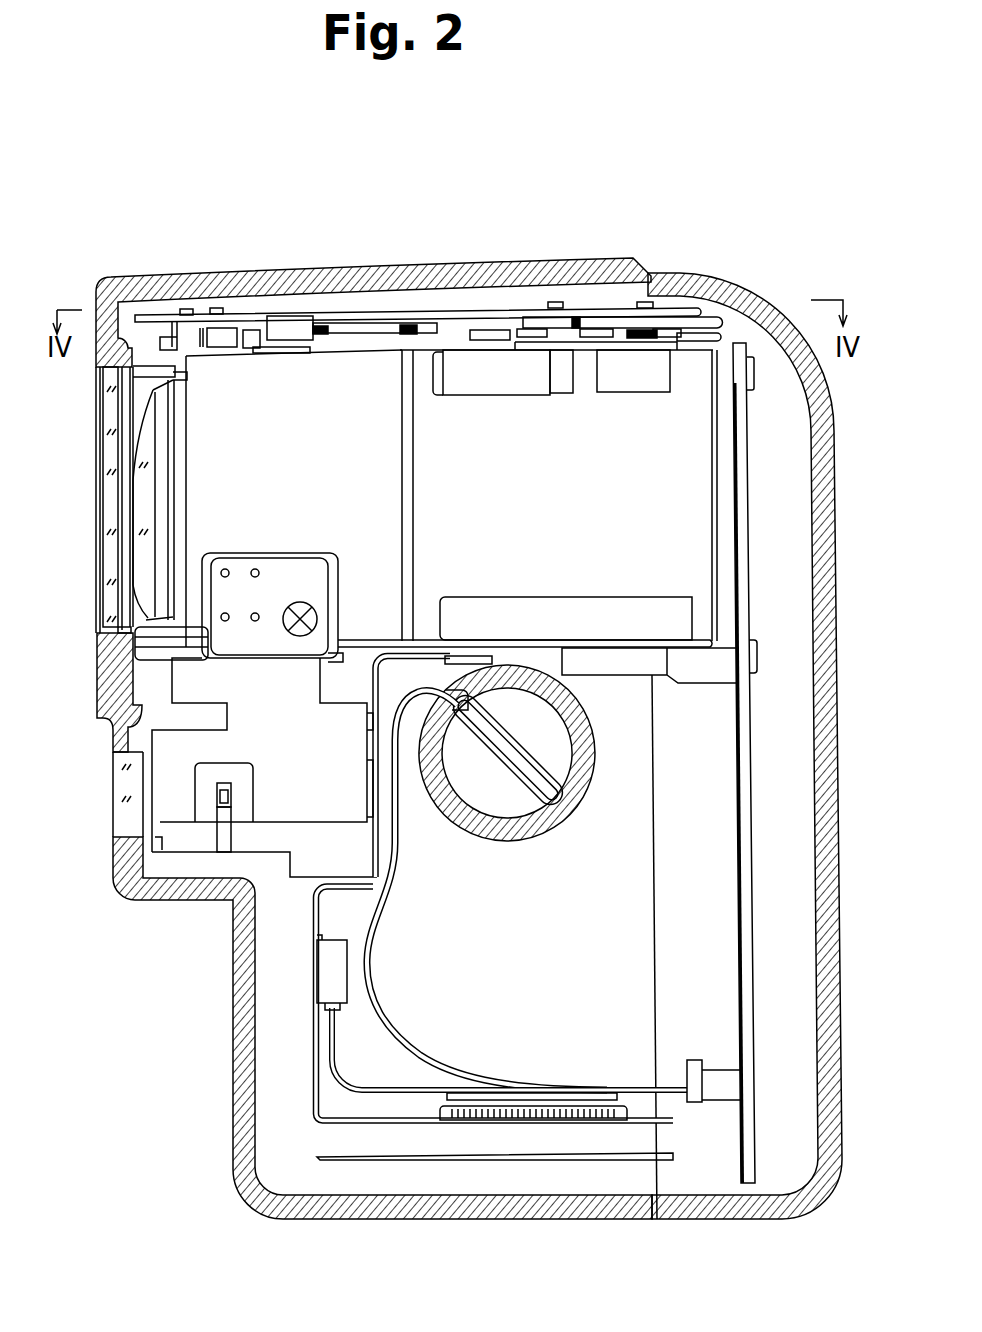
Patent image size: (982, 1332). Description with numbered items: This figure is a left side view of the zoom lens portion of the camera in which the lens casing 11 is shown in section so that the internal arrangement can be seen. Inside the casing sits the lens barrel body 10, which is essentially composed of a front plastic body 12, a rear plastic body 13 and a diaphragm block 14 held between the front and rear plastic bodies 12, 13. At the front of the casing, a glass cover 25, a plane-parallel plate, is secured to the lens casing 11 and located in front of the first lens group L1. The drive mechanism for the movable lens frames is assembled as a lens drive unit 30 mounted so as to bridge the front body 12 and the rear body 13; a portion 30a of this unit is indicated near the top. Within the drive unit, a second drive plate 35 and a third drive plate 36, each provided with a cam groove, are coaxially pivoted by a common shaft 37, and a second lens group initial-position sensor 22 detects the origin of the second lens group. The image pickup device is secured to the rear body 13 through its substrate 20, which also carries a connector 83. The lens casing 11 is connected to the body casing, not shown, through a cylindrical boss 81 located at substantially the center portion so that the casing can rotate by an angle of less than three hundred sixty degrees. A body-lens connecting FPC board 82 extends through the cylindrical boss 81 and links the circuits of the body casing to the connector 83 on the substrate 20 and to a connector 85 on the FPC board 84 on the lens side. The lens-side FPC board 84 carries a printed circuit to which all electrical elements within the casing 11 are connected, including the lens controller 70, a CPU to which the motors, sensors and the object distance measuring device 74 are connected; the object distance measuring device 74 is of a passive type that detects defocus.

The lens barrel body 10 is at (727, 327).
The lens casing 11 is at (243, 1080).
The front plastic body 12 is at (373, 463).
The rear plastic body 13 is at (697, 520).
The diaphragm block 14 is at (412, 505).
The substrate 20 is at (748, 858).
The second lens group initial-position sensor 22 is at (237, 553).
The glass cover 25 is at (110, 617).
The lens drive unit 30 is at (626, 273).
The cover flange 30a is at (432, 325).
The second drive plate 35 is at (345, 316).
The third drive plate 36 is at (478, 325).
The common shaft 37 is at (387, 353).
The lens controller 70 is at (573, 1100).
The object distance measuring device 74 is at (177, 807).
The cylindrical boss 81 is at (548, 815).
The body-lens connecting FPC board 82 is at (340, 1060).
The connector 83 is at (720, 1087).
The FPC board on the lens side 84 is at (297, 573).
The connector 85 is at (322, 970).
The first lens group L1 is at (147, 552).